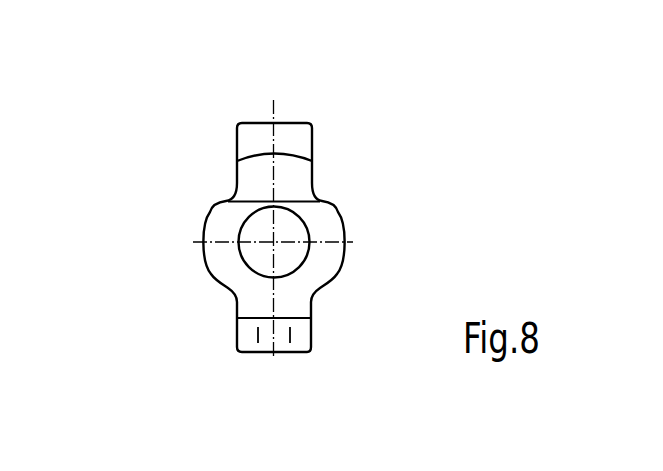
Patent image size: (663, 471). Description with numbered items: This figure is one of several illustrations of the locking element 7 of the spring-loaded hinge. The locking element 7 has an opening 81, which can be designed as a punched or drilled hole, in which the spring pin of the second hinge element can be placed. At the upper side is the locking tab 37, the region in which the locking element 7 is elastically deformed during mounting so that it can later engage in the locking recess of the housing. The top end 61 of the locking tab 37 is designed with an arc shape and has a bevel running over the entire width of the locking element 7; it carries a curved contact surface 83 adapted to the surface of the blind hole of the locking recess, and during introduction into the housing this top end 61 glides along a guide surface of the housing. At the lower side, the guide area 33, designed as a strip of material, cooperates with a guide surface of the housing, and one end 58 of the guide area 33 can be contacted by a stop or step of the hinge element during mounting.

The locking element 7 is at (172, 146).
The contact surface 83 is at (262, 139).
The top end 61 is at (292, 122).
The locking tab 37 is at (318, 159).
The opening 81 is at (294, 233).
The guide area 33 is at (320, 336).
The end 58 is at (279, 333).